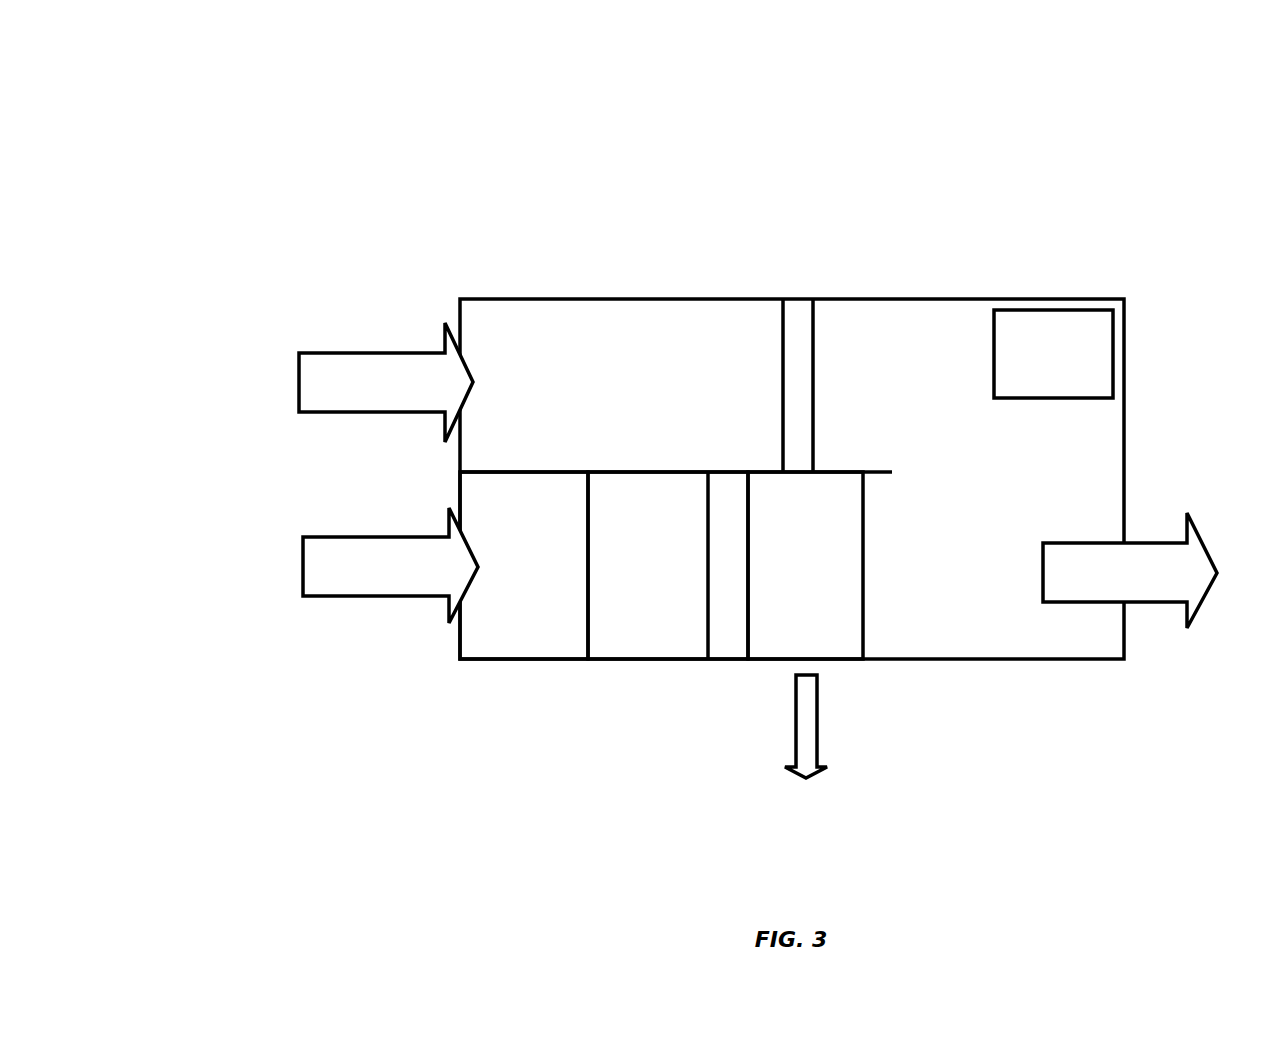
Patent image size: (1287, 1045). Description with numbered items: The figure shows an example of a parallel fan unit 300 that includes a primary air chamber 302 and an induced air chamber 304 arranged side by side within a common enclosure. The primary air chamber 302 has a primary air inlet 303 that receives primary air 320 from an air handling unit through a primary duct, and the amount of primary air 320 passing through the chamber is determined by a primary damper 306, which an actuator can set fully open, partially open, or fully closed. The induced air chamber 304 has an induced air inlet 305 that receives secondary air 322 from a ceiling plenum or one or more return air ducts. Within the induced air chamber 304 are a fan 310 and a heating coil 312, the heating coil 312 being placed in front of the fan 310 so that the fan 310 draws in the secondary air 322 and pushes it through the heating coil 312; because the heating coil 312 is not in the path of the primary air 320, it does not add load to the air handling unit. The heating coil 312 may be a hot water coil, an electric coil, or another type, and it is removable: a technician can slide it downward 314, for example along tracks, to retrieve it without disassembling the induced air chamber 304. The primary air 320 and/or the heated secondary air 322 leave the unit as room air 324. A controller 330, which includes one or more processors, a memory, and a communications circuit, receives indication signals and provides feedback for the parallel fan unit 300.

The parallel fan unit 300 is at (190, 96).
The primary air chamber 302 is at (550, 299).
The primary air inlet 303 is at (430, 325).
The induced air chamber 304 is at (537, 659).
The induced air inlet 305 is at (438, 632).
The primary damper 306 is at (797, 299).
The fan 310 is at (642, 659).
The heating coil 312 is at (860, 659).
The downward 314 is at (820, 773).
The primary air 320 is at (312, 353).
The secondary air 322 is at (315, 537).
The room air 324 is at (1187, 628).
The controller 330 is at (1065, 299).